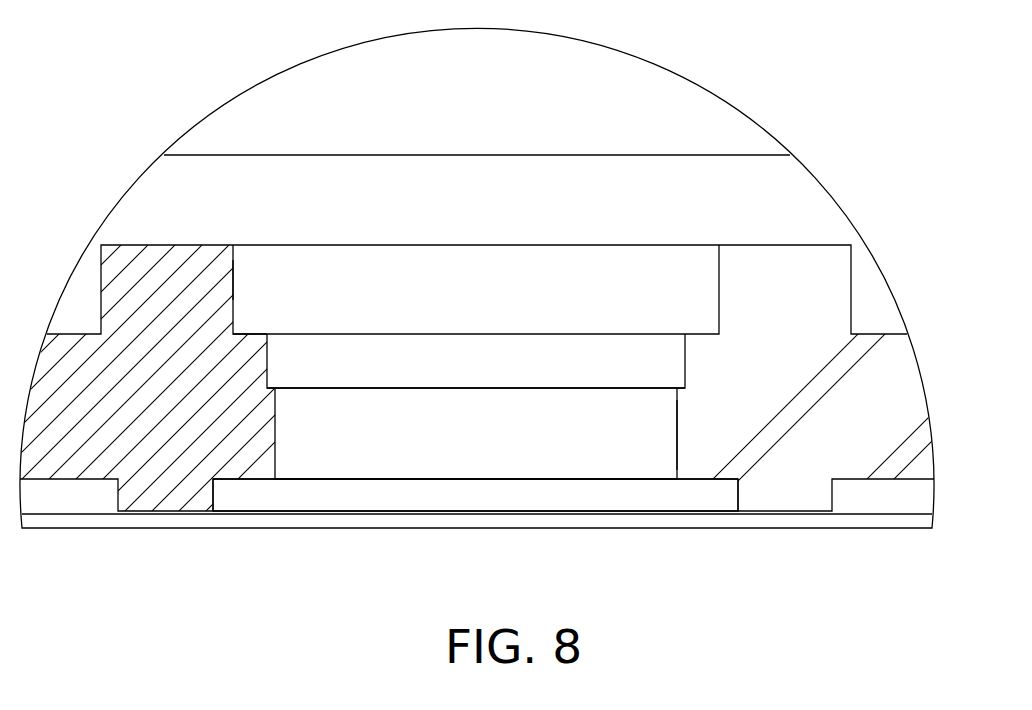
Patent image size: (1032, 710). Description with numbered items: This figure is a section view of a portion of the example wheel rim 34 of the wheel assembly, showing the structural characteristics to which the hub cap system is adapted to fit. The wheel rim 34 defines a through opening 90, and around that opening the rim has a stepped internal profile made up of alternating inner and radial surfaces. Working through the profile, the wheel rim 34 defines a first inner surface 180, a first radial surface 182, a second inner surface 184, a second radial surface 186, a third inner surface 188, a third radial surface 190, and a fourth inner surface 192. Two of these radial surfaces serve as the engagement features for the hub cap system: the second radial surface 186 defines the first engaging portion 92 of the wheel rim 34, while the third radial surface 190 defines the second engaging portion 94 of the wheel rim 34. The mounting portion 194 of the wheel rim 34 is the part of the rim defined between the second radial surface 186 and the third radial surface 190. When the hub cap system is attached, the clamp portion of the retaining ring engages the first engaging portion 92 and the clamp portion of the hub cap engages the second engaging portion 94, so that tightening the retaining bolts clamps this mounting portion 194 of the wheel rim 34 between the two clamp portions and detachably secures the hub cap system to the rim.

The wheel rim 34 is at (785, 234).
The through opening 90 is at (493, 317).
The first inner surface 180 is at (235, 280).
The first radial surface 182 is at (253, 334).
The second inner surface 184 is at (268, 357).
The second radial surface 186 is at (275, 388).
The first engaging portion 92 is at (476, 373).
The third inner surface 188 is at (275, 437).
The third radial surface 190 is at (245, 481).
The second engaging portion 94 is at (475, 523).
The fourth inner surface 192 is at (214, 481).
The mounting portion 194 is at (662, 448).